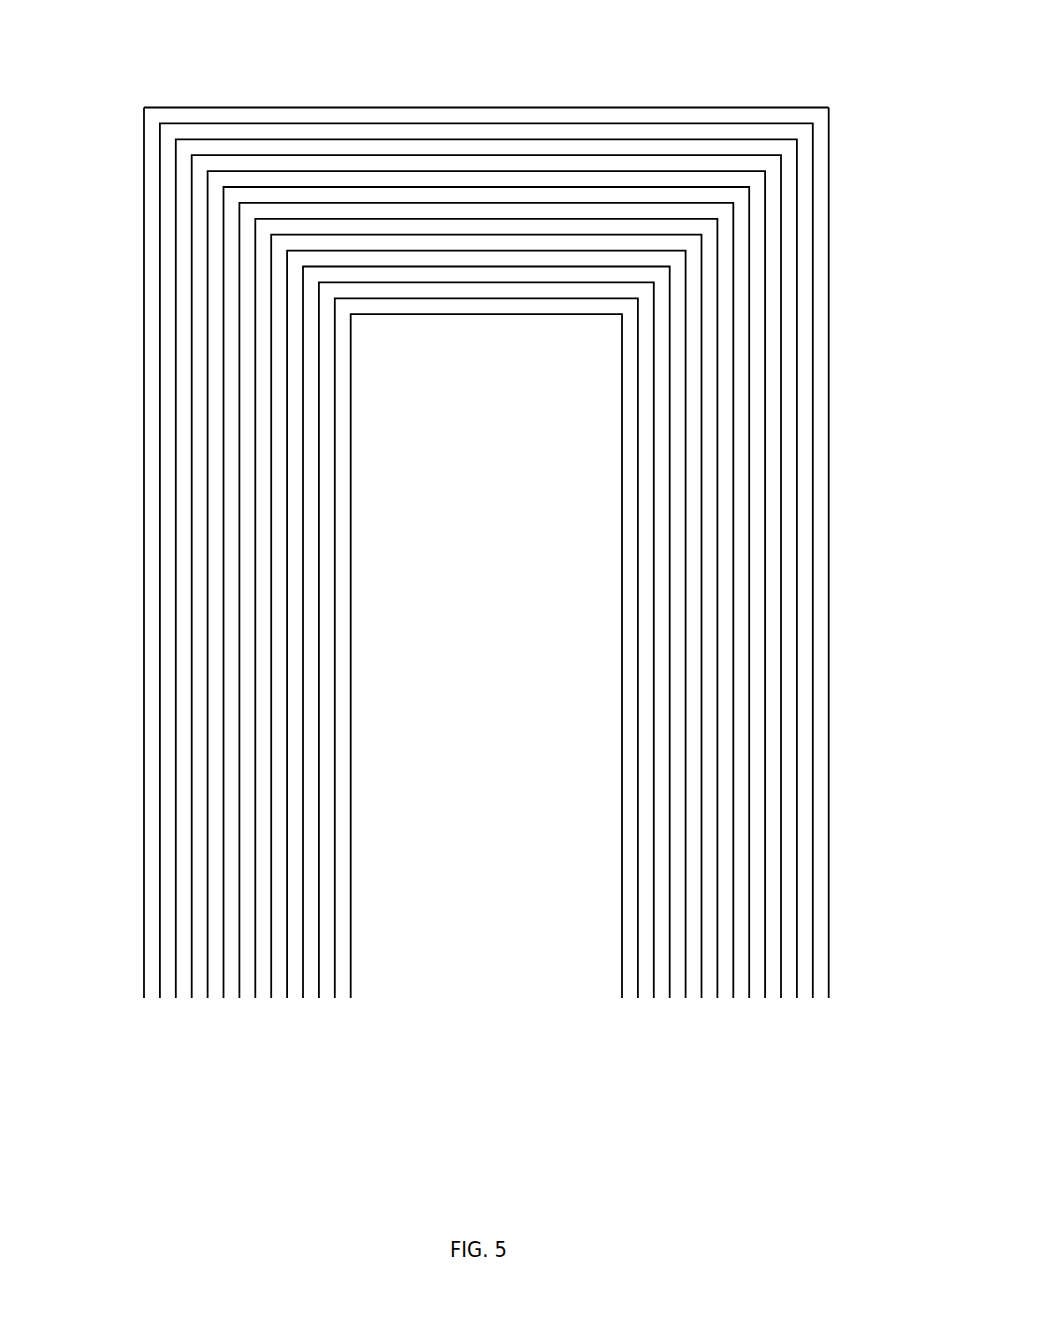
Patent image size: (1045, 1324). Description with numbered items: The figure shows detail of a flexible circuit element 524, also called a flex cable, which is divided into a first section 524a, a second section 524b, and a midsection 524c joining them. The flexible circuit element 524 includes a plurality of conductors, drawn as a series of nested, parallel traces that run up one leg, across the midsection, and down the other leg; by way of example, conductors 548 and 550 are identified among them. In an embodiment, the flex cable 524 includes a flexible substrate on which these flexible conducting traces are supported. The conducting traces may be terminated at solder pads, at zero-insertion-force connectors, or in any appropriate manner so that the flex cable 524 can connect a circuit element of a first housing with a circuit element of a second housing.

The flexible circuit element 524 is at (514, 506).
The first section 524a is at (144, 525).
The second section 524b is at (829, 443).
The midsection 524c is at (438, 105).
The conductor 548 is at (177, 725).
The conductor 550 is at (733, 568).